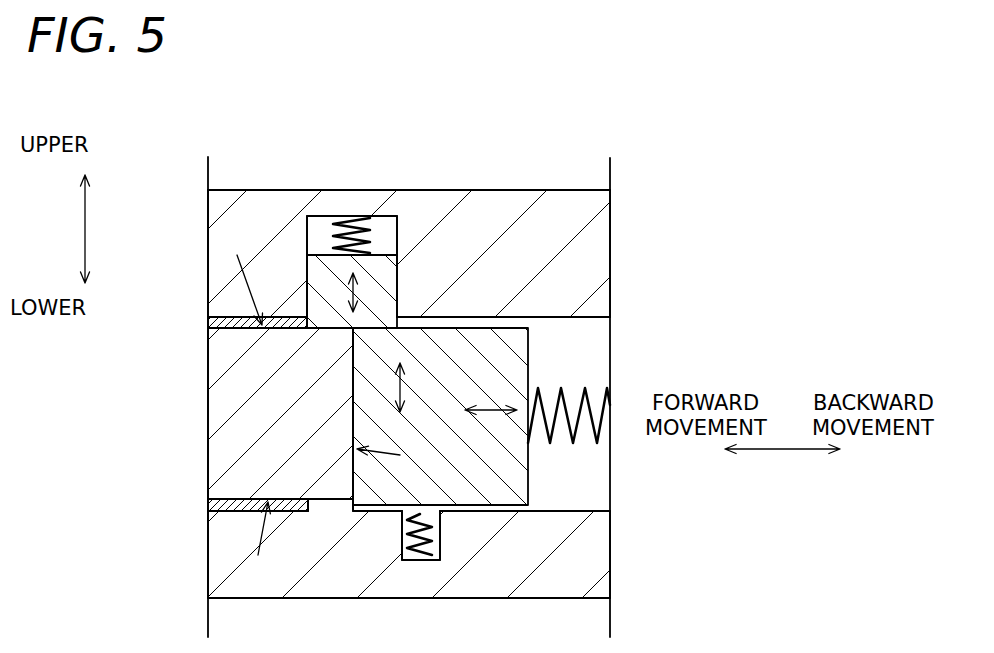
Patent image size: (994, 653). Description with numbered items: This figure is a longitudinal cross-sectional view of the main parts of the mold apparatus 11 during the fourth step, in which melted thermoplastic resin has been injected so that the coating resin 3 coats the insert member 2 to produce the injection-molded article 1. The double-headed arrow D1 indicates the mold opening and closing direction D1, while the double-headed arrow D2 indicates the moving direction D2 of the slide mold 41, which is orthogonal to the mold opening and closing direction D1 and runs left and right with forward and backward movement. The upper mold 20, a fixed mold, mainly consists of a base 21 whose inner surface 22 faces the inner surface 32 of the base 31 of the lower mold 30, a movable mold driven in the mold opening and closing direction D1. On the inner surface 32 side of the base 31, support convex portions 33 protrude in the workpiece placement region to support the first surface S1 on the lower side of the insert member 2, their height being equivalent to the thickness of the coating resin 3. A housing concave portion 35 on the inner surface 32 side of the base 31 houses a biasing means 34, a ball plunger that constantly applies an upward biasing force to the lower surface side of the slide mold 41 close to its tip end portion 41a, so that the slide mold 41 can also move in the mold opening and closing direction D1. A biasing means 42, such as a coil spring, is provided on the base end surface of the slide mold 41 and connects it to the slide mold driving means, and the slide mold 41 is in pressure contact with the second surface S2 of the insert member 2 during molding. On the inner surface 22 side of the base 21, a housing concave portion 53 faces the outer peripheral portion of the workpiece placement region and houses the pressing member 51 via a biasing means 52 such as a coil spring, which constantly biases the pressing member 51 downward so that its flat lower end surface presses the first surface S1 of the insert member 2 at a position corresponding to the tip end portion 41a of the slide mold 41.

The injection-molded article 1 is at (208, 372).
The insert member 2 is at (237, 440).
The coating resin 3 is at (230, 315).
The mold apparatus 11 is at (727, 197).
The upper mold 20 is at (610, 205).
The base 21 is at (588, 247).
The inner surface 22 is at (569, 328).
The lower mold 30 is at (610, 580).
The base 31 is at (592, 555).
The inner surface 32 is at (597, 508).
The support convex portion 33 is at (326, 505).
The biasing means 34 is at (408, 560).
The housing concave portion 35 is at (440, 515).
The slide mold 41 is at (510, 372).
The tip end portion 41a is at (367, 417).
The biasing means 42 is at (553, 430).
The pressing member 51 is at (382, 283).
The biasing means 52 is at (332, 222).
The housing concave portion 53 is at (310, 240).
The first surface S1 is at (247, 404).
The second surface S2 is at (397, 459).
The mold opening and closing direction D1 is at (85, 228).
The moving direction D2 is at (783, 452).